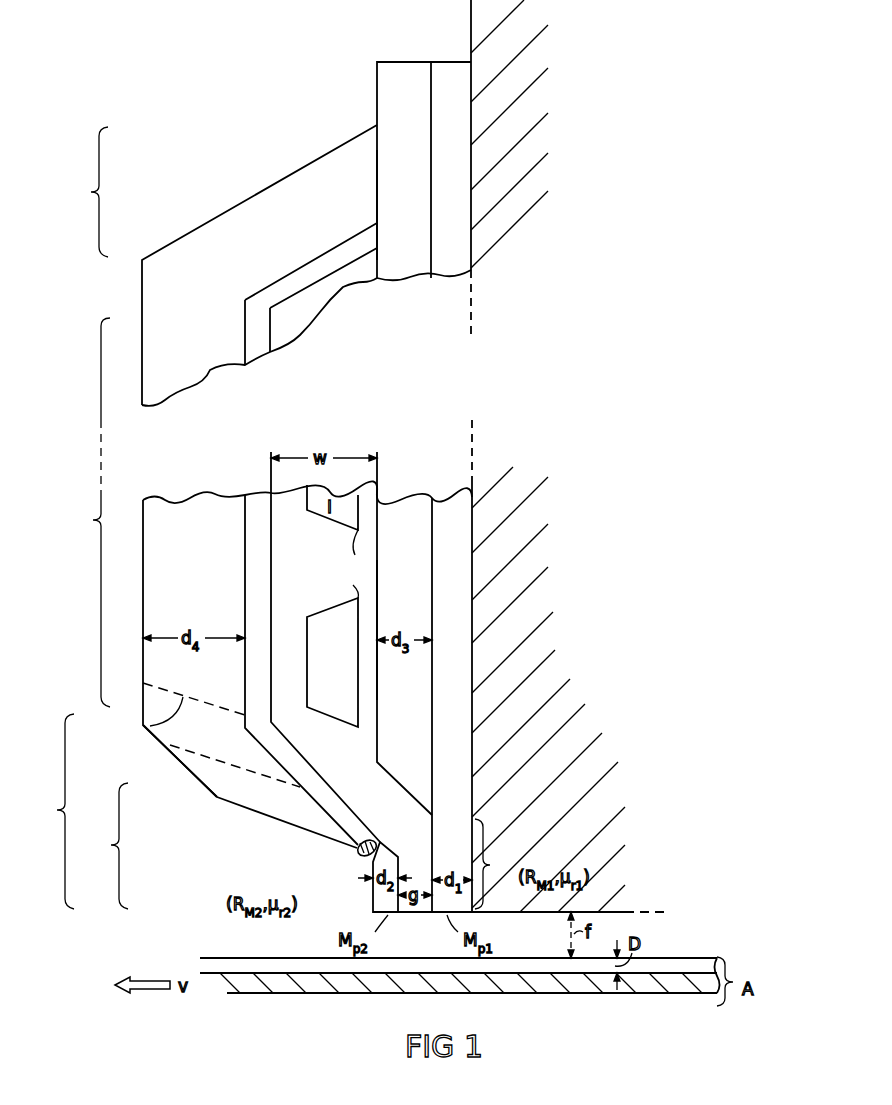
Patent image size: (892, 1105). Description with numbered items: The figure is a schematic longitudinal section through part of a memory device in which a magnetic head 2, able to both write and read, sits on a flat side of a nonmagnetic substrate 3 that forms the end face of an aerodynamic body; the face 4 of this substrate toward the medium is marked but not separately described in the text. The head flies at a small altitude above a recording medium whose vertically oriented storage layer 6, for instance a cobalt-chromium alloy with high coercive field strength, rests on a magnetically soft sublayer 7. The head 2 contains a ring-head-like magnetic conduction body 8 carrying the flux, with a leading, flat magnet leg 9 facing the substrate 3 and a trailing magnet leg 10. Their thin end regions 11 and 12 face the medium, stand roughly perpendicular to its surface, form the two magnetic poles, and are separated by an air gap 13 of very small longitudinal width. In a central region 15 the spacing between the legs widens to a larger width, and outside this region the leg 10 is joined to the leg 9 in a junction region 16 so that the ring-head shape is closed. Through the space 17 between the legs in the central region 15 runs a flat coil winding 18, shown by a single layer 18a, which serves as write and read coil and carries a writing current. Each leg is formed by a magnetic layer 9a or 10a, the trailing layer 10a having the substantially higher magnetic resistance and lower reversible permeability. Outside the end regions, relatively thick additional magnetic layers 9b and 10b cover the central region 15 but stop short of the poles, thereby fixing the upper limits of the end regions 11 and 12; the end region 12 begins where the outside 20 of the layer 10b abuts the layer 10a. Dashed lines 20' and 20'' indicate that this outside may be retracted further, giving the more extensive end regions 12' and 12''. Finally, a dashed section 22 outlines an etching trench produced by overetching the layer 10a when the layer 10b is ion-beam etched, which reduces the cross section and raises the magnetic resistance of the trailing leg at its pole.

The magnetic head 2 is at (246, 846).
The nonmagnetic substrate 3 is at (588, 822).
The pole face of magnetic body 4 is at (513, 915).
The storage layer 6 is at (667, 968).
The magnetically soft sublayer 7 is at (584, 985).
The magnetic conduction body 8 is at (450, 273).
The magnet leg 9 is at (473, 660).
The magnetic layer 9a is at (444, 161).
The additional magnetic layer 9b is at (415, 216).
The magnet leg 10 is at (143, 568).
The magnetic layer 10a is at (328, 265).
The additional magnetic layer 10b is at (212, 347).
The end region 11 is at (497, 864).
The end region 12 is at (363, 877).
The end region 12' is at (108, 846).
The end region 12'' is at (53, 811).
The air gap 13 is at (425, 908).
The central region 15 is at (89, 512).
The junction region 16 is at (87, 192).
The space 17 is at (317, 447).
The flat coil winding 18 is at (352, 564).
The layer 18a is at (332, 662).
The outside 20 is at (287, 831).
The dashed line 20' is at (235, 789).
The dashed line 20'' is at (143, 717).
The dashed section 22 is at (373, 842).